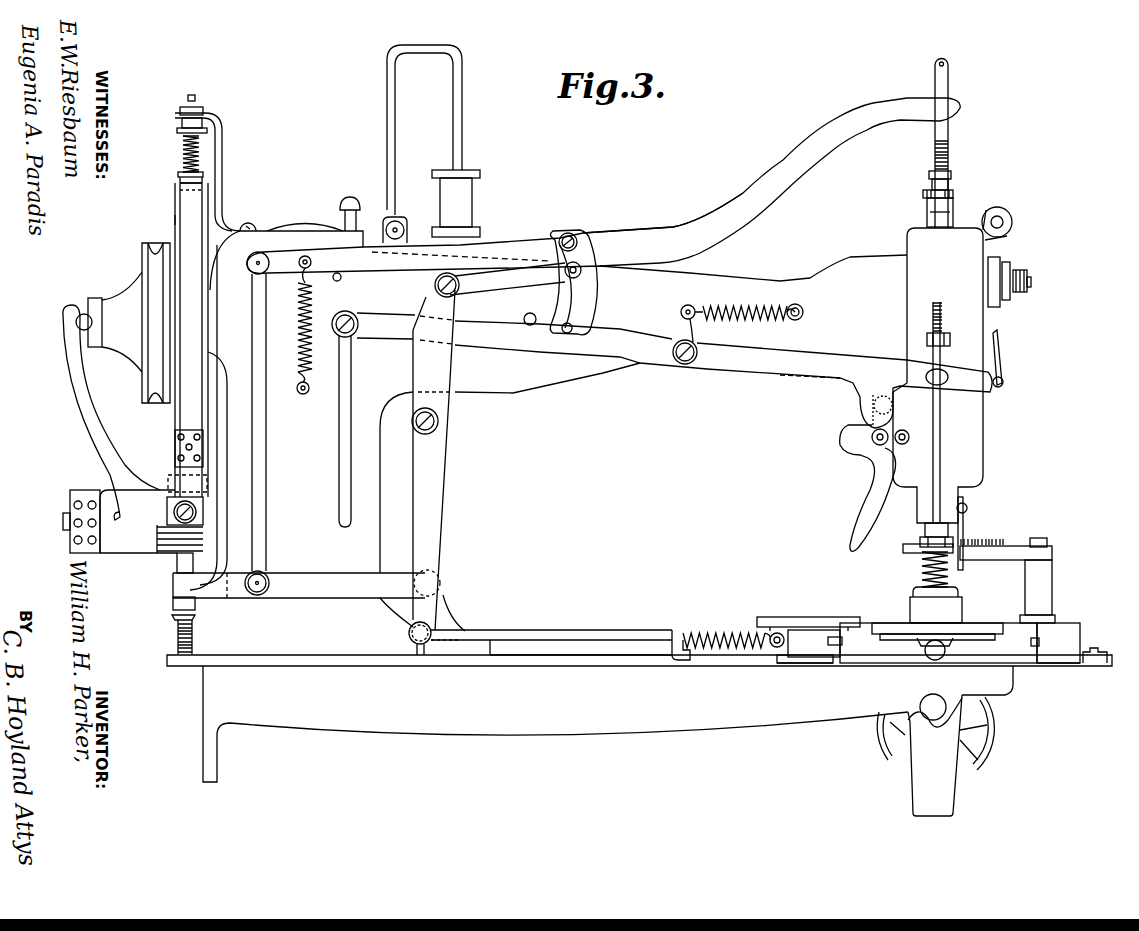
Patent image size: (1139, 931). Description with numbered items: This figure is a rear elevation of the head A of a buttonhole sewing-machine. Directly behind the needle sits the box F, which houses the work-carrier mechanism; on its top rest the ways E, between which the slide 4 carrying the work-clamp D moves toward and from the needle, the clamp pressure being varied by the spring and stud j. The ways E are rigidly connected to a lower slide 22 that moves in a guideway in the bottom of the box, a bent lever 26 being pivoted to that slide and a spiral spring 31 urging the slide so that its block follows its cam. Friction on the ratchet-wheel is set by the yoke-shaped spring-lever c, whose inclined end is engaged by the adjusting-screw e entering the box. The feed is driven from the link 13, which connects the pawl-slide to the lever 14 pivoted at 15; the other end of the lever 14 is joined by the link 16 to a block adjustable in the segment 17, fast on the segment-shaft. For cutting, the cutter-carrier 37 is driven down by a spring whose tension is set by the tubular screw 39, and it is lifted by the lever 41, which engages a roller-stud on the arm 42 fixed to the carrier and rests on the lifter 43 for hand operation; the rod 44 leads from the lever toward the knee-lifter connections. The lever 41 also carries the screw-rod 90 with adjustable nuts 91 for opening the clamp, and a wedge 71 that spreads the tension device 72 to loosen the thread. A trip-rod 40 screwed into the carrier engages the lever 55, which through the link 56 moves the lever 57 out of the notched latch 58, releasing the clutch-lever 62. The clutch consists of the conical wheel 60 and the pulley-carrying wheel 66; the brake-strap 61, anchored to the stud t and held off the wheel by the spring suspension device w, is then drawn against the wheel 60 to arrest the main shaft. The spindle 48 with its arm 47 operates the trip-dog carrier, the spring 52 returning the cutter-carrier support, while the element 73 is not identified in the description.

The spring suspension device w is at (180, 150).
The conical wheel 60 is at (178, 190).
The second wheel 66 is at (173, 218).
The brake-strap 61 is at (187, 351).
The clutch-lever 62 is at (75, 388).
The stud t is at (168, 480).
The bracket 73 is at (70, 541).
The notched latch 58 is at (172, 603).
The second lever 57 is at (306, 584).
The link 56 is at (265, 458).
The rod 44 is at (341, 487).
The lever 14 is at (432, 472).
The pivot 15 is at (440, 421).
The link 16 is at (500, 280).
The segment 17 is at (588, 300).
The lever 55 is at (663, 222).
The head A is at (761, 323).
The lever 41 is at (680, 370).
The arm 42 is at (893, 404).
The lifter 43 is at (860, 490).
The tension device 72 is at (1018, 270).
The trip-rod 40 is at (949, 150).
The cutter-carrier 37 is at (954, 184).
The tubular screw 39 is at (955, 194).
The screw-rod 90 is at (941, 449).
The nuts 91 is at (951, 340).
The wedge 71 is at (1001, 357).
The spring 52 is at (918, 535).
The spring and stud j is at (922, 562).
The arm 47 is at (1017, 558).
The spindle 48 is at (1040, 535).
The clamp D is at (936, 605).
The slide 4 is at (893, 623).
The adjusting-screw e is at (925, 651).
The spring-lever c is at (947, 648).
The box F is at (808, 612).
The ways E is at (942, 643).
The lower slide 22 is at (805, 667).
The bent lever 26 is at (1053, 668).
The link 13 is at (604, 646).
The spiral spring 31 is at (733, 630).